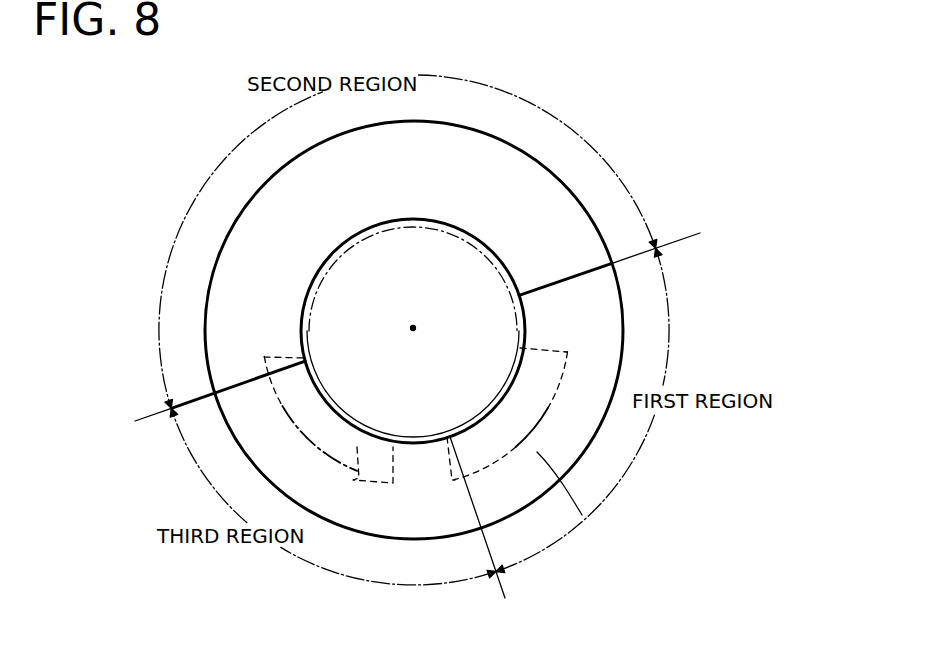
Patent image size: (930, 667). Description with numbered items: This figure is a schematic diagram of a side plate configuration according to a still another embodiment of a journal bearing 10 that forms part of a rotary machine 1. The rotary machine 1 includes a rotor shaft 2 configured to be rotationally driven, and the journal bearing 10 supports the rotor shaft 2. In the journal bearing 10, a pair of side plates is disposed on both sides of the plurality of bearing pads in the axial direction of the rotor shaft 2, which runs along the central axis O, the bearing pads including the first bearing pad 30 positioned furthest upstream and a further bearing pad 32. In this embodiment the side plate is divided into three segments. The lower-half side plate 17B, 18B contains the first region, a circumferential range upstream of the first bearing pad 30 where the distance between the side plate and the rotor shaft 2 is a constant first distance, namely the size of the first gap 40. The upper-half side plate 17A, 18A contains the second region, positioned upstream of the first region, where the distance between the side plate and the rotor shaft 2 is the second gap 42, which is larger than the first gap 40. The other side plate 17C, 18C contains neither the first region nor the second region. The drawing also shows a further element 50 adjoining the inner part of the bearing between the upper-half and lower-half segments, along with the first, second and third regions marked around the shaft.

The rotary machine 1 is at (749, 73).
The rotor shaft 2 is at (430, 250).
The journal bearing 10 is at (584, 161).
The first bearing pad 30 is at (590, 518).
The bearing pad 32 is at (357, 487).
The first gap 40 is at (513, 383).
The second gap 42 is at (335, 257).
The connecting portion 50 is at (617, 288).
The upper-half side plate 18A is at (153, 231).
The upper-half side plate 17A is at (248, 272).
The lower-half side plate 18B is at (575, 525).
The lower-half side plate 17B is at (513, 490).
The other side plate 18C is at (149, 472).
The other side plate 17C is at (257, 435).